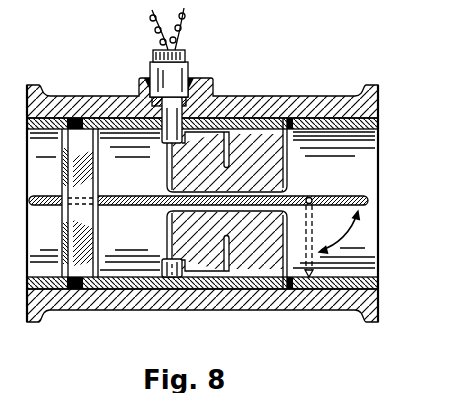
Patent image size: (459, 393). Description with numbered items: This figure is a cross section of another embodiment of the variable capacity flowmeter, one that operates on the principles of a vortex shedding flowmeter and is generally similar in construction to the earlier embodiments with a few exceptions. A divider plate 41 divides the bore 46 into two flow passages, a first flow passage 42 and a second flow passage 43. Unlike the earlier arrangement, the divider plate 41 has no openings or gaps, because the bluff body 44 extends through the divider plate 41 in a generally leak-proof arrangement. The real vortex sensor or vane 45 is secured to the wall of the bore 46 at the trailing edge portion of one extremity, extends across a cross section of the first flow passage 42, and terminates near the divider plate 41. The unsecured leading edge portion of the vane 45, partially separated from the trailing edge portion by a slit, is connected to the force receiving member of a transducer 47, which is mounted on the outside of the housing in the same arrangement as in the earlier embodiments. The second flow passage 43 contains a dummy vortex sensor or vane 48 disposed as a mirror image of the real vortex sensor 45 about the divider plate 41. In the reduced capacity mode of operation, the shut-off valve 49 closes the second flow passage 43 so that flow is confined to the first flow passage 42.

The divider plate 41 is at (135, 193).
The first flow passage 42 is at (338, 167).
The second flow passage 43 is at (357, 234).
The bluff body 44 is at (83, 222).
The real vortex sensor or vane 45 is at (258, 157).
The bore 46 is at (38, 133).
The transducer 47 is at (168, 78).
The dummy vortex sensor or vane 48 is at (253, 250).
The shut-off valve 49 is at (343, 197).